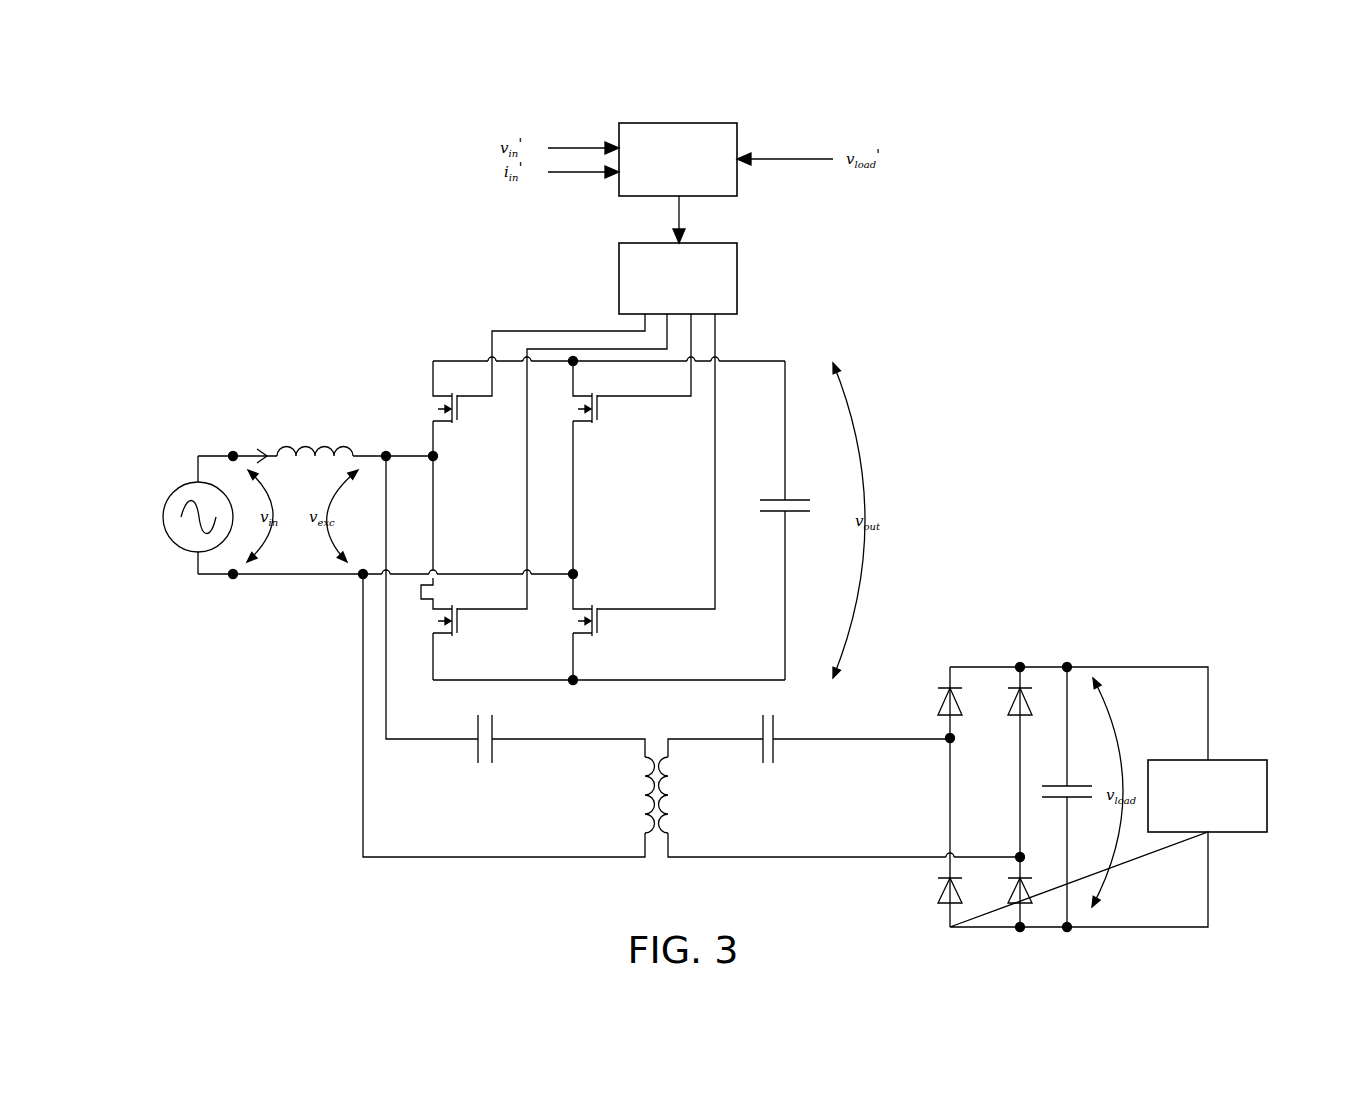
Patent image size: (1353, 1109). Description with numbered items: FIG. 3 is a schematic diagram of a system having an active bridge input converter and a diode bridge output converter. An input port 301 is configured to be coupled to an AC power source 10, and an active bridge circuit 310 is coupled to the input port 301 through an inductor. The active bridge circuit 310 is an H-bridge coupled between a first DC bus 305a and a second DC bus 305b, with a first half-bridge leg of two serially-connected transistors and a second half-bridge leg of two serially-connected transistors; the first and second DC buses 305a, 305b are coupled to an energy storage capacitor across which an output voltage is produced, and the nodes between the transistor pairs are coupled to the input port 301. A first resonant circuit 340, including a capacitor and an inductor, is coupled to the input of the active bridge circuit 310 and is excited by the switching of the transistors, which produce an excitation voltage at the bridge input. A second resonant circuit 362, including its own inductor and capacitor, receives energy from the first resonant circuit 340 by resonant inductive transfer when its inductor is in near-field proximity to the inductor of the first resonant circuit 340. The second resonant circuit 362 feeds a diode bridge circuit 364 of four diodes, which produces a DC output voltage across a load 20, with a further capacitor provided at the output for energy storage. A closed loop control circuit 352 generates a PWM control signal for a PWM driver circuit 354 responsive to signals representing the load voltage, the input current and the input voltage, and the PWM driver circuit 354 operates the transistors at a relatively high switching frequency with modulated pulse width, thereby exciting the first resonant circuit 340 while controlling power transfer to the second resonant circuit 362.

The AC power source 10 is at (163, 517).
The load 20 is at (1267, 796).
The input port 301 is at (232, 421).
The first DC bus 305a is at (762, 358).
The second DC bus 305b is at (700, 680).
The active bridge circuit 310 is at (446, 311).
The first resonant circuit 340 is at (448, 878).
The closed loop control circuit 352 is at (679, 123).
The PWM driver circuit 354 is at (737, 277).
The second resonant circuit 362 is at (794, 882).
The diode bridge circuit 364 is at (1051, 607).